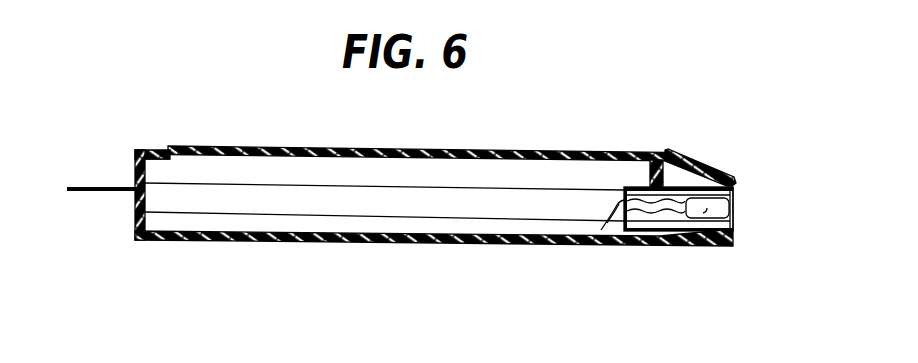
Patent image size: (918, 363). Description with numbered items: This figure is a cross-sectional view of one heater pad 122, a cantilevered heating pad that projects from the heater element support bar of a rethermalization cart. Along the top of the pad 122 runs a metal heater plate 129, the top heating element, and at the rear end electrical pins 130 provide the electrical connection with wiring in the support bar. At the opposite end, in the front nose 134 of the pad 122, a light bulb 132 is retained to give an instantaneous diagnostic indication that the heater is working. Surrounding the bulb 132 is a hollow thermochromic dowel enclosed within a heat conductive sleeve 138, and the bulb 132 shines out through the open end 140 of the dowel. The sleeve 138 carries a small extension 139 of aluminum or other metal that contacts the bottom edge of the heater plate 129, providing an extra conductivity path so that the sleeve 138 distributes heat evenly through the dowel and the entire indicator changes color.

The heater pad 122 is at (583, 104).
The metal heater plate 129 is at (249, 145).
The electrical pins 130 is at (98, 193).
The light bulb 132 is at (700, 244).
The front nose 134 is at (731, 181).
The heat conductive sleeve 138 is at (733, 201).
The extension 139 is at (664, 152).
The end 140 is at (733, 199).